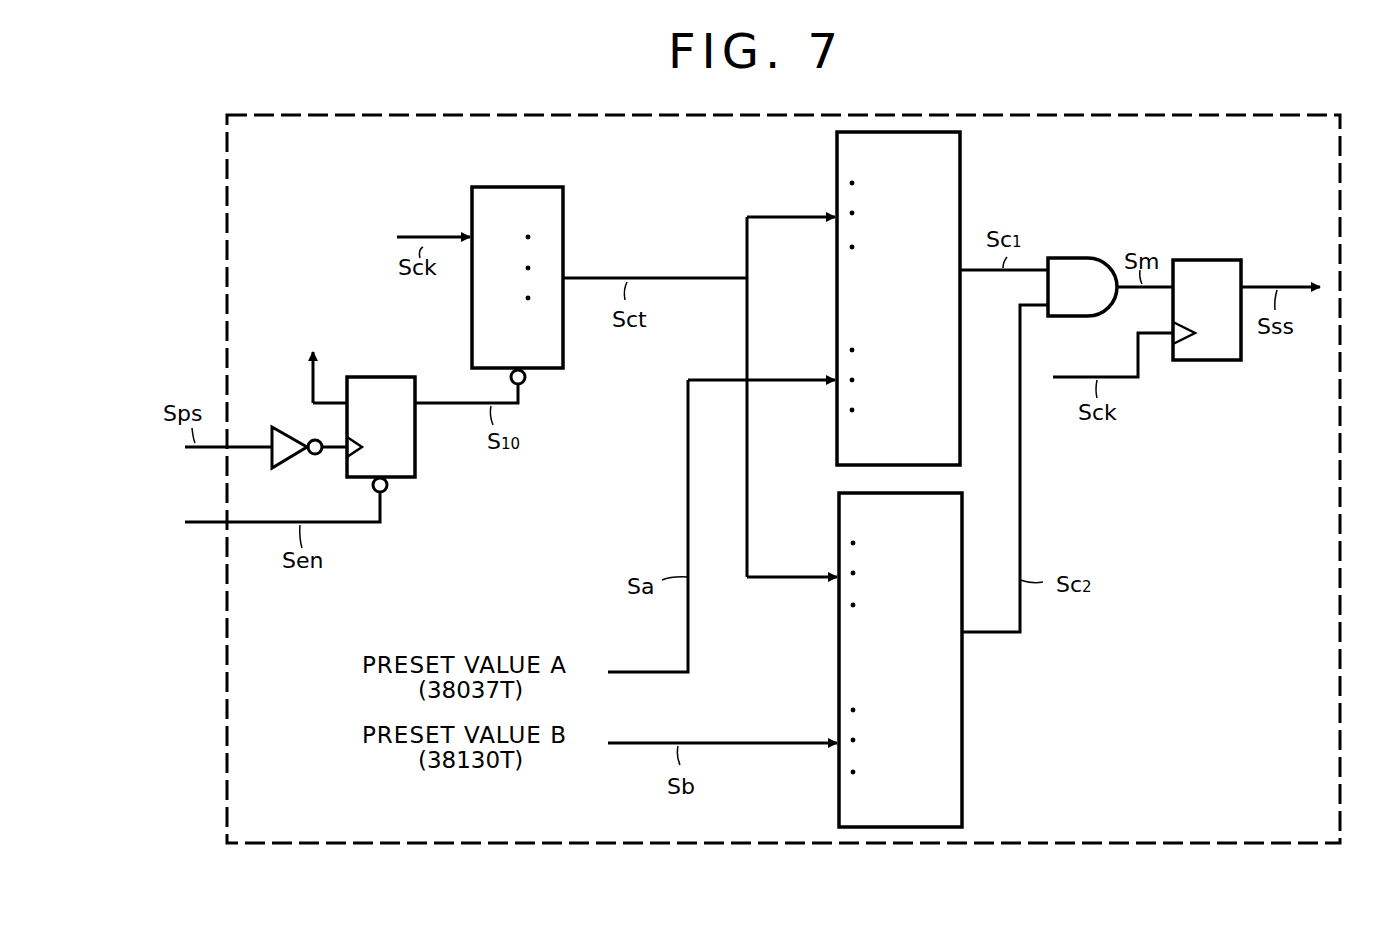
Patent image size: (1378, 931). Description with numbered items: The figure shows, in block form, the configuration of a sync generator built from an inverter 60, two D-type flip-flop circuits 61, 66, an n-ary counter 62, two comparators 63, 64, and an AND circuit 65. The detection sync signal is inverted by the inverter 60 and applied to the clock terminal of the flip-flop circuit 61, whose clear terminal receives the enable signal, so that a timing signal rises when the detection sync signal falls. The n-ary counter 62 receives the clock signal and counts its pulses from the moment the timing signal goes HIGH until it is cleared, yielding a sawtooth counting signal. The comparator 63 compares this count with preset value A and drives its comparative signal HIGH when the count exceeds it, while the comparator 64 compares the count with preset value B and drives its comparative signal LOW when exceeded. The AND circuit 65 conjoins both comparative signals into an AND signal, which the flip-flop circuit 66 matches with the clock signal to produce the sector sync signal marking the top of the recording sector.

The inverter 60 is at (290, 461).
The D-type flip-flop circuit 61 is at (415, 460).
The n-ary counter 62 is at (543, 185).
The comparator 63 is at (960, 175).
The comparator 64 is at (962, 718).
The AND circuit 65 is at (1075, 256).
The D-type flip-flop circuit 66 is at (1207, 265).